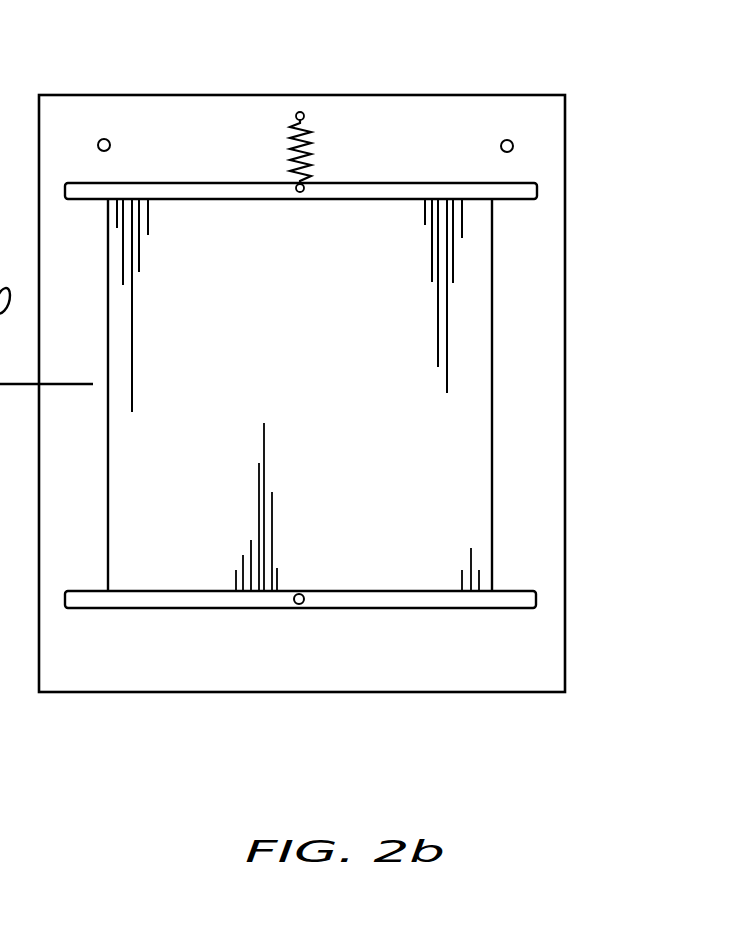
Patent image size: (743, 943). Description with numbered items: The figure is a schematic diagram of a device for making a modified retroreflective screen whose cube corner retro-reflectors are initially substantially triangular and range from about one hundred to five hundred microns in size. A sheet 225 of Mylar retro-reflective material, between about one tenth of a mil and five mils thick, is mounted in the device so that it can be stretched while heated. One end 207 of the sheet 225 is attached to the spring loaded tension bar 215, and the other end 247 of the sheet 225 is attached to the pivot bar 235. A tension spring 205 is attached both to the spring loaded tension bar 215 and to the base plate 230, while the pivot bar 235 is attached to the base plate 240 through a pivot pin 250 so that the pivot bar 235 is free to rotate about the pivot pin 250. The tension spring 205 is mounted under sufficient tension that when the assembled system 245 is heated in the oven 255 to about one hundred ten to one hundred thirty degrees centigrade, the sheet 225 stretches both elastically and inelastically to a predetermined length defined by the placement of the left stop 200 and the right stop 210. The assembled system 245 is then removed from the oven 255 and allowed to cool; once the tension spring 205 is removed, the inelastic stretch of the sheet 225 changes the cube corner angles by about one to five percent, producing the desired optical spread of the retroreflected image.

The left stop 200 is at (107, 138).
The tension spring 205 is at (310, 140).
The one end of the sheet 207 is at (352, 210).
The right stop 210 is at (513, 140).
The spring loaded tension bar 215 is at (525, 178).
The sheet 225 is at (430, 402).
The base plate 230 is at (518, 563).
The pivot bar 235 is at (524, 592).
The base plate 240 is at (515, 632).
The assembled system 245 is at (580, 607).
The other end of the sheet 247 is at (353, 573).
The pivot pin 250 is at (300, 605).
The oven 255 is at (0, 722).